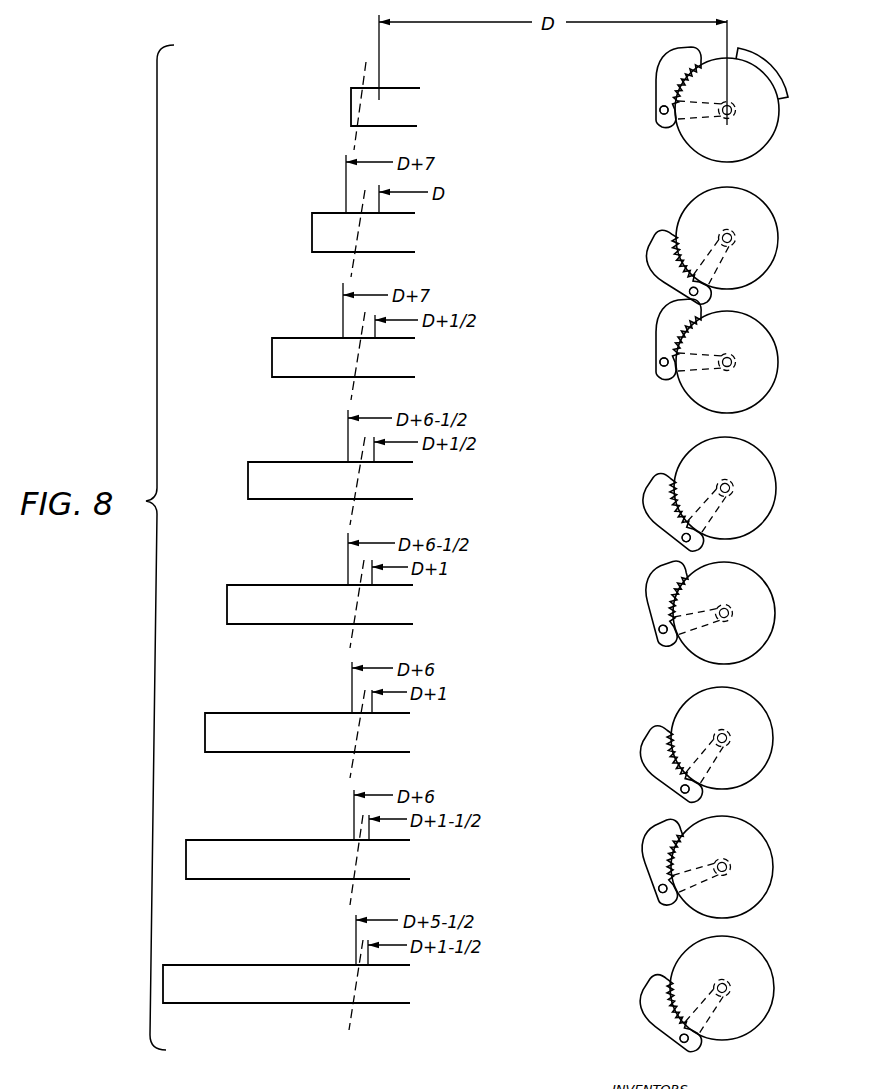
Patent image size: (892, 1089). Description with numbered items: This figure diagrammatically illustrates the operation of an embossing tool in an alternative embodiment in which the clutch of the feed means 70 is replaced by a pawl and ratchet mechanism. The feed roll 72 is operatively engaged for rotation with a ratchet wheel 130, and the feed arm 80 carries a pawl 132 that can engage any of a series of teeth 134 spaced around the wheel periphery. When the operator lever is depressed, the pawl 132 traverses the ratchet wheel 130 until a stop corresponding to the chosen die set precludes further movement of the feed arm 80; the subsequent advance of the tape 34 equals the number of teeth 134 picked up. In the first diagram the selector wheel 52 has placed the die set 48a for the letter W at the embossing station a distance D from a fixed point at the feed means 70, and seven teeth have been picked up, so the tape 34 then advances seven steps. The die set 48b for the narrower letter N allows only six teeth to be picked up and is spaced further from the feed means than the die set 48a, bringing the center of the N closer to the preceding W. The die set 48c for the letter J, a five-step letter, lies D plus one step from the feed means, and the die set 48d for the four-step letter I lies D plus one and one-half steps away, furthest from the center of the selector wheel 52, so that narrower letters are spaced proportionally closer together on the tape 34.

The tape 34 is at (350, 106).
The selector wheel 52 is at (368, 66).
The die set for the character W 48a is at (391, 96).
The die set for the letter N 48b is at (386, 356).
The die set for the letter J 48c is at (384, 609).
The die set for the letter I 48d is at (374, 864).
The feed means 70 is at (746, 48).
The feed roll 72 is at (770, 68).
The feed arm 80 is at (668, 119).
The ratchet wheel 130 is at (772, 117).
The pawl 132 is at (673, 68).
The teeth 134 is at (679, 91).